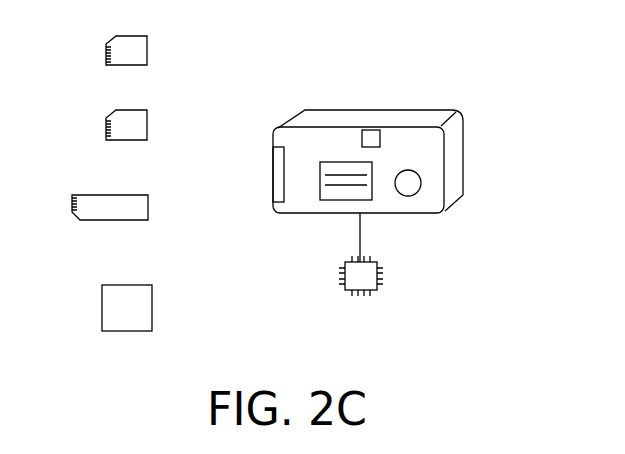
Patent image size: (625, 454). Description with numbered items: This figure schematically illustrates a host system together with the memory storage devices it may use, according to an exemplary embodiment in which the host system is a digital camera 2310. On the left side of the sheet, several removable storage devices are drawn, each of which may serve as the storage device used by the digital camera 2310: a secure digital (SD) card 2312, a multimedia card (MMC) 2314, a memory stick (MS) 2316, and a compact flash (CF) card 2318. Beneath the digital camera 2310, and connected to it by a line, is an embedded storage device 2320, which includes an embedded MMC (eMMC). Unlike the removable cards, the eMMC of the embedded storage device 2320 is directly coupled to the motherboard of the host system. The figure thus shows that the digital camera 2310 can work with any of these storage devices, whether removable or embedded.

The secure digital (SD) card 2312 is at (148, 44).
The multimedia card (MMC) 2314 is at (148, 118).
The memory stick (MS) 2316 is at (148, 208).
The compact flash (CF) card 2318 is at (152, 300).
The digital camera 2310 is at (465, 148).
The embedded storage device 2320 is at (383, 277).